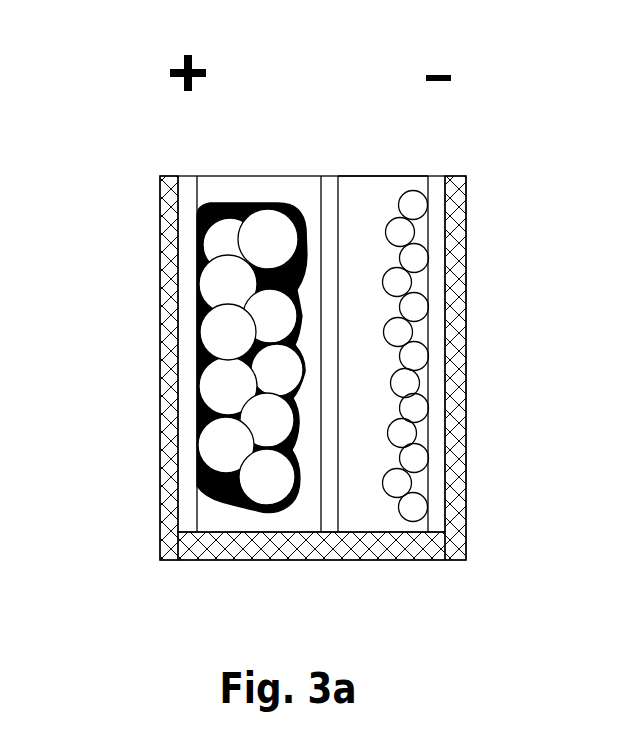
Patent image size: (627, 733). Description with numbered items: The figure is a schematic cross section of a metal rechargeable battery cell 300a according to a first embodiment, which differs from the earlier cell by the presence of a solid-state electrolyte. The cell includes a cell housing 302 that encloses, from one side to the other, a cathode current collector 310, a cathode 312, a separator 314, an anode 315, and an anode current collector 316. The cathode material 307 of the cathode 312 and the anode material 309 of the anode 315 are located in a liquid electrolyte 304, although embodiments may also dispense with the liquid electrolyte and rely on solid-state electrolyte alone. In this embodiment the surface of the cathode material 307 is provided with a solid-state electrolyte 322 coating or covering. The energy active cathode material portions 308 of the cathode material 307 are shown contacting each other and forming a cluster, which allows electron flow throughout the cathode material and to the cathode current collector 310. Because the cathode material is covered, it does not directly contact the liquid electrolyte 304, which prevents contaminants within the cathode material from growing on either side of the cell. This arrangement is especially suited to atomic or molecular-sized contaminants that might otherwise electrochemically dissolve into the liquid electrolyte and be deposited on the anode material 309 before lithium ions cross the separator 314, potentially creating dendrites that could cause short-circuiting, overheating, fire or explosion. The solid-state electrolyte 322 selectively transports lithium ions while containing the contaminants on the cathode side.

The metal rechargeable battery cell 300a is at (481, 418).
The cell housing 302 is at (466, 368).
The liquid electrolyte 304 is at (270, 522).
The cathode material 307 is at (235, 342).
The energy active cathode material portions 308 is at (278, 250).
The anode material 309 is at (414, 258).
The cathode current collector 310 is at (160, 195).
The cathode 312 is at (293, 180).
The separator 314 is at (331, 176).
The anode 315 is at (373, 197).
The anode current collector 316 is at (437, 228).
The solid-state electrolyte 322 is at (238, 203).